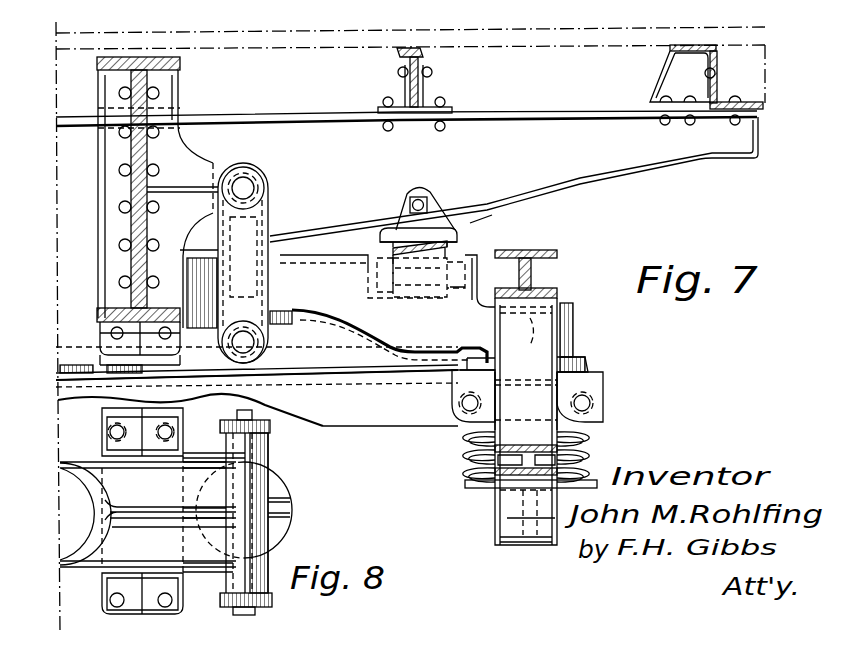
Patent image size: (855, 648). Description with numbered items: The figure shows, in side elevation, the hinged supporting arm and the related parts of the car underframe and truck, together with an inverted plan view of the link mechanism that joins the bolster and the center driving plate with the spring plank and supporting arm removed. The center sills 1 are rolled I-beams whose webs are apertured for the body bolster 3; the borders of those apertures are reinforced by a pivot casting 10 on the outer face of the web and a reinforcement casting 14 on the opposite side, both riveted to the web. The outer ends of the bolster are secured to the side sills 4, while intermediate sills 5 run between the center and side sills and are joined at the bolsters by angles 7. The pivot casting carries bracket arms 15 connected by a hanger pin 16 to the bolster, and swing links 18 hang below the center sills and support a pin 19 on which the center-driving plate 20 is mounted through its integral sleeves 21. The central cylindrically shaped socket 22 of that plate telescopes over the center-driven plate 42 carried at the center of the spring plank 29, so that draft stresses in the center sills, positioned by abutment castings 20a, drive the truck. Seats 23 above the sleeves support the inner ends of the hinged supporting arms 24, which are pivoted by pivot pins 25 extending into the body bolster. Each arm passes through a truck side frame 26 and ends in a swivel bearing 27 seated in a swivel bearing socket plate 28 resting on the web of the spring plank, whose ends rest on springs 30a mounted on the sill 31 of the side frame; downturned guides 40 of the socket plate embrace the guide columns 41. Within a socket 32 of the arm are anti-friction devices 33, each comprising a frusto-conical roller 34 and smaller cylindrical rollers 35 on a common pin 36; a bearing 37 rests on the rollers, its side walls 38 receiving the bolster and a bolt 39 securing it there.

In FIG. 7, the center sills 1 is at (135, 185).
In FIG. 8, the center sills 1 is at (104, 421).
In FIG. 7, the body bolster 3 is at (553, 180).
In FIG. 7, the side sills 4 is at (720, 60).
In FIG. 7, the intermediate sills 5 is at (425, 55).
In FIG. 7, the angles 7 is at (420, 90).
In FIG. 7, the pivot casting 10 is at (168, 100).
In FIG. 7, the reinforcement casting 14 is at (103, 140).
In FIG. 7, the bracket arms 15 is at (195, 170).
In FIG. 7, the hanger pin 16 is at (268, 185).
In FIG. 7, the links 18 is at (270, 212).
In FIG. 8, the links 18 is at (252, 423).
In FIG. 7, the pin 19 is at (255, 348).
In FIG. 8, the pin 19 is at (270, 438).
In FIG. 7, the center-driving plate 20 is at (172, 360).
In FIG. 8, the center-driving plate 20 is at (130, 500).
In FIG. 7, the abutment castings 20a is at (123, 317).
In FIG. 8, the abutment castings 20a is at (110, 596).
In FIG. 7, the sleeves 21 is at (270, 324).
In FIG. 8, the sleeves 21 is at (268, 455).
In FIG. 7, the cylindrically shaped socket 22 is at (105, 338).
In FIG. 8, the cylindrically shaped socket 22 is at (110, 535).
In FIG. 7, the seats 23 is at (290, 316).
In FIG. 8, the seats 23 is at (292, 505).
In FIG. 7, the hinged supporting arms 24 is at (367, 317).
In FIG. 7, the pivot pins 25 is at (290, 244).
In FIG. 7, the side frames 26 is at (555, 290).
In FIG. 7, the swivel bearing 27 is at (457, 352).
In FIG. 7, the swivel bearing socket plate 28 is at (590, 366).
In FIG. 7, the spring plank 29 is at (396, 420).
In FIG. 7, the springs 30a is at (610, 456).
In FIG. 7, the sill 31 is at (475, 488).
In FIG. 7, the sockets 32 is at (428, 304).
In FIG. 7, the anti-friction devices 33 is at (480, 220).
In FIG. 7, the frusto-conical roller 34 is at (452, 248).
In FIG. 7, the smaller cylindrical rollers 35 is at (477, 260).
In FIG. 7, the pin 36 is at (392, 280).
In FIG. 7, the bearing 37 is at (432, 242).
In FIG. 7, the side walls 38 is at (402, 215).
In FIG. 7, the bolt 39 is at (420, 197).
In FIG. 7, the guides 40 is at (458, 388).
In FIG. 7, the guide columns 41 is at (540, 412).
In FIG. 7, the center-driven plate 42 is at (143, 375).